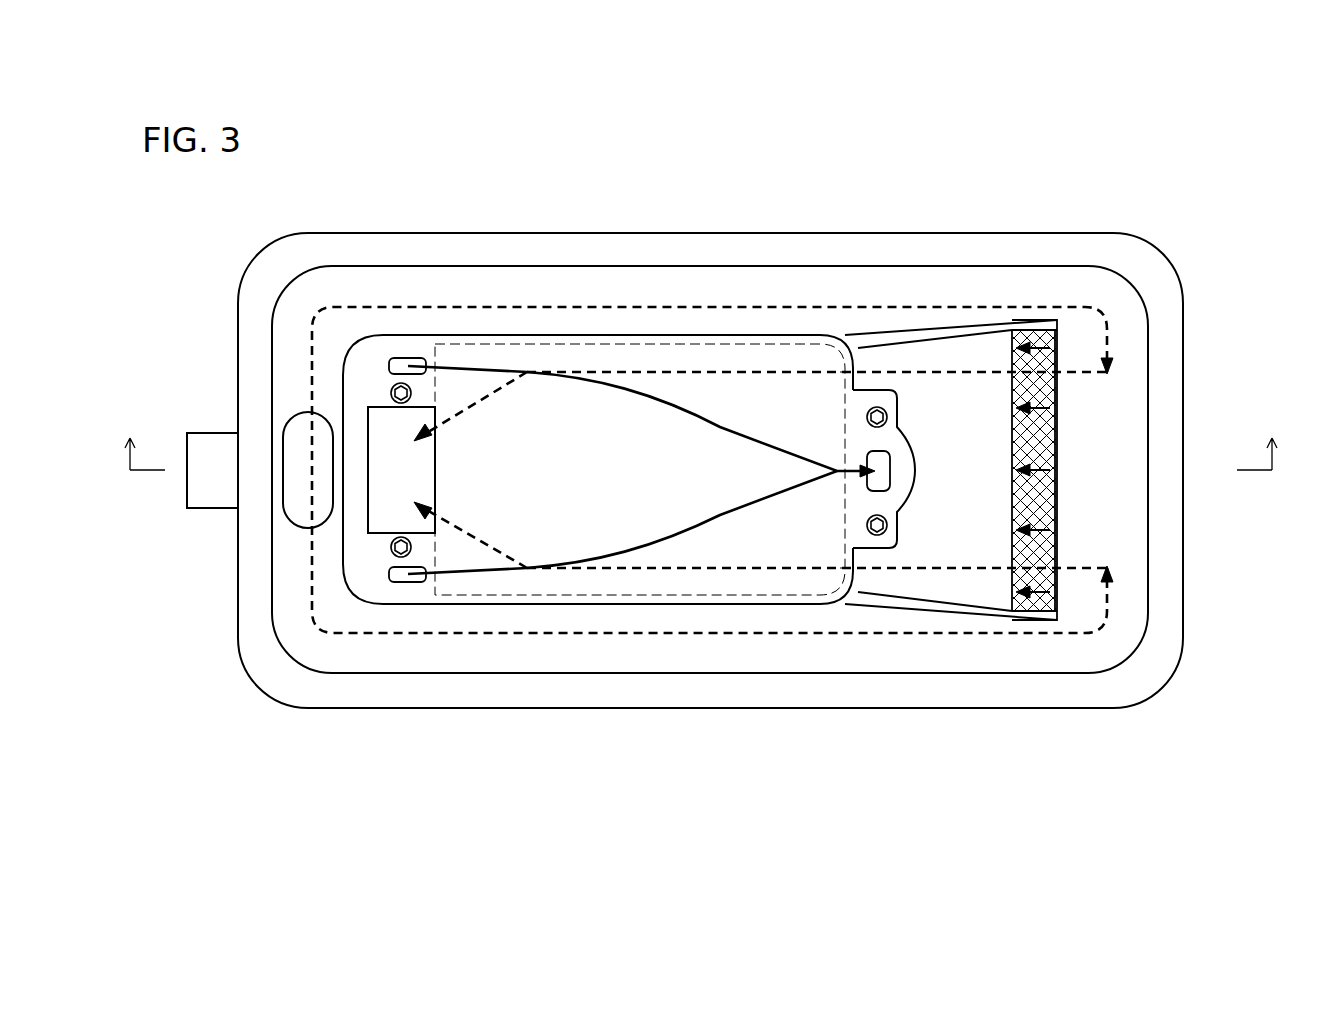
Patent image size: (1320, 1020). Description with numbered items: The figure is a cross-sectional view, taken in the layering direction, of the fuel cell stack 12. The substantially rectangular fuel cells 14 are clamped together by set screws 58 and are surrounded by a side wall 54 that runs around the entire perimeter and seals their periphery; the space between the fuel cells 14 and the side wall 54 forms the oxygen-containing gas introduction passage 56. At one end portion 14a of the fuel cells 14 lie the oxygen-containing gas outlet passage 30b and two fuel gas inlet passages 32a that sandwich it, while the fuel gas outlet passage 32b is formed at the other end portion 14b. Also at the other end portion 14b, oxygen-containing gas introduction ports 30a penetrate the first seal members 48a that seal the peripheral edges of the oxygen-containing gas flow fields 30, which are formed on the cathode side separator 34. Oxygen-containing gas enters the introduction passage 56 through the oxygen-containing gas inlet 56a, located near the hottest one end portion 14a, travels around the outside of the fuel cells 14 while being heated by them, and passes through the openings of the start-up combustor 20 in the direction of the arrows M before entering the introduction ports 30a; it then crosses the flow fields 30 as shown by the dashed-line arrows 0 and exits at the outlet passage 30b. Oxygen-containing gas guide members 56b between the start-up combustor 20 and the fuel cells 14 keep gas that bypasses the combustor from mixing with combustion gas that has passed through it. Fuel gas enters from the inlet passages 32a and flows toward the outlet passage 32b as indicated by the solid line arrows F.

The fuel cell stack 12 is at (1092, 202).
The fuel cells 14 is at (776, 333).
The one end portion 14a is at (342, 402).
The other end portion 14b is at (907, 441).
The start-up combustor 20 is at (1058, 441).
The oxygen-containing gas flow field 30 is at (641, 518).
The oxygen-containing gas introduction ports 30a is at (845, 375).
The oxygen-containing gas outlet passage 30b is at (420, 475).
The fuel gas inlet passages 32a is at (407, 357).
The fuel gas outlet passage 32b is at (888, 478).
The cathode side separator 34 is at (512, 596).
The first seal members 48a is at (717, 596).
The side wall 54 is at (613, 257).
The oxygen-containing gas introduction passage 56 is at (623, 660).
The oxygen-containing gas inlet 56a is at (305, 512).
The oxygen-containing gas guide members 56b is at (893, 331).
The set screws 58 is at (391, 392).
The arrows M is at (1037, 408).
The solid line arrows F is at (720, 514).
The dashed-line arrows O 0 is at (480, 402).